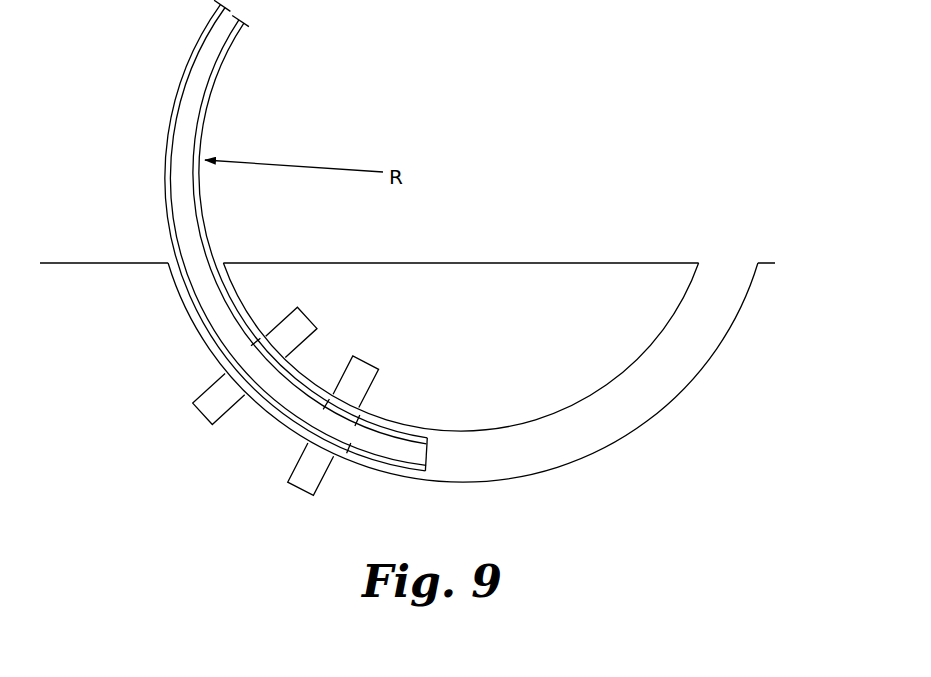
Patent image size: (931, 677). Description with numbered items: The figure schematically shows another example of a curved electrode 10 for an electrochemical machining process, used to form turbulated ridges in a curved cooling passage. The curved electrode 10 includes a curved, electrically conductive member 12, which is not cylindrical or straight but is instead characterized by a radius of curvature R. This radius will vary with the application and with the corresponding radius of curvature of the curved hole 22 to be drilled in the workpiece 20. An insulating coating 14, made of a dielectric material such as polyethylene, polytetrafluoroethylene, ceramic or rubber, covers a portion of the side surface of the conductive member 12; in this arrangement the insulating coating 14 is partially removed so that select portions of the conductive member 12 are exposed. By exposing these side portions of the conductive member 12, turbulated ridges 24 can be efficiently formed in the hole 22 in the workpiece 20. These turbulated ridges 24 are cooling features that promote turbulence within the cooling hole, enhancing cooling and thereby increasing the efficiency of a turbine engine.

The curved electrode 10 is at (247, 235).
The curved, electrically conductive member 12 is at (296, 235).
The insulating coating 14 is at (224, 57).
The workpiece 20 is at (640, 268).
The curved hole 22 is at (731, 270).
The turbulated ridges 24 is at (202, 405).